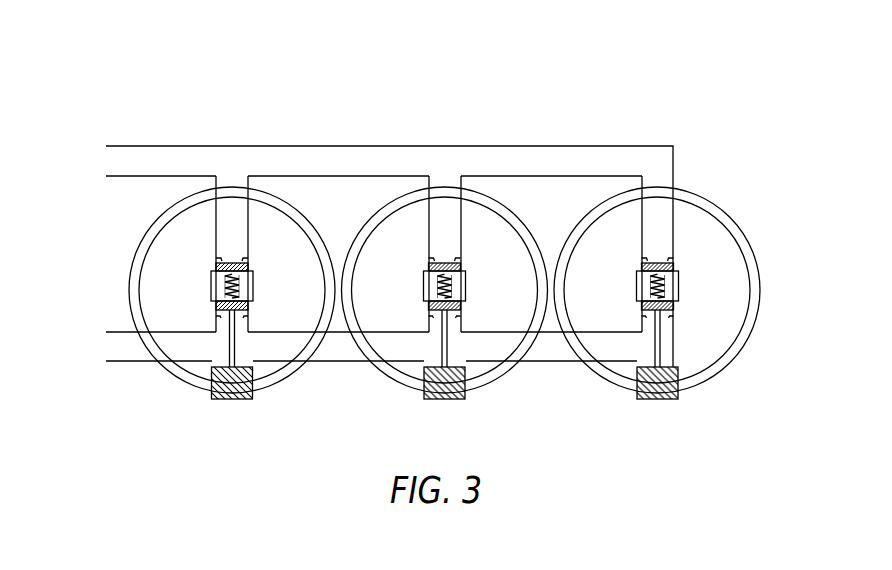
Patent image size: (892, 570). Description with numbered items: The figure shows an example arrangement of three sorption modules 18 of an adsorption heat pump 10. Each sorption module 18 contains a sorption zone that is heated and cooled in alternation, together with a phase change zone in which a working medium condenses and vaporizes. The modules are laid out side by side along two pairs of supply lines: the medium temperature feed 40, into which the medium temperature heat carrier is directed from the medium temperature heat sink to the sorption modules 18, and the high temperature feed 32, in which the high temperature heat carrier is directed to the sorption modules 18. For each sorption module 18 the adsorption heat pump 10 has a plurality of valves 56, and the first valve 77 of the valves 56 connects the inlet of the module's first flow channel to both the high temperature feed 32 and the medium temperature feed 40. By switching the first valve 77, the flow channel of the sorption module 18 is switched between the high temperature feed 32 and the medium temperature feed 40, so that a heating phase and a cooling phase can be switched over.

The adsorption heat pump 10 is at (638, 88).
The sorption module 18 is at (275, 243).
The high temperature feed 32 is at (128, 351).
The medium temperature feed 40 is at (267, 162).
The valves 56 is at (210, 283).
The first valve 77 is at (445, 286).